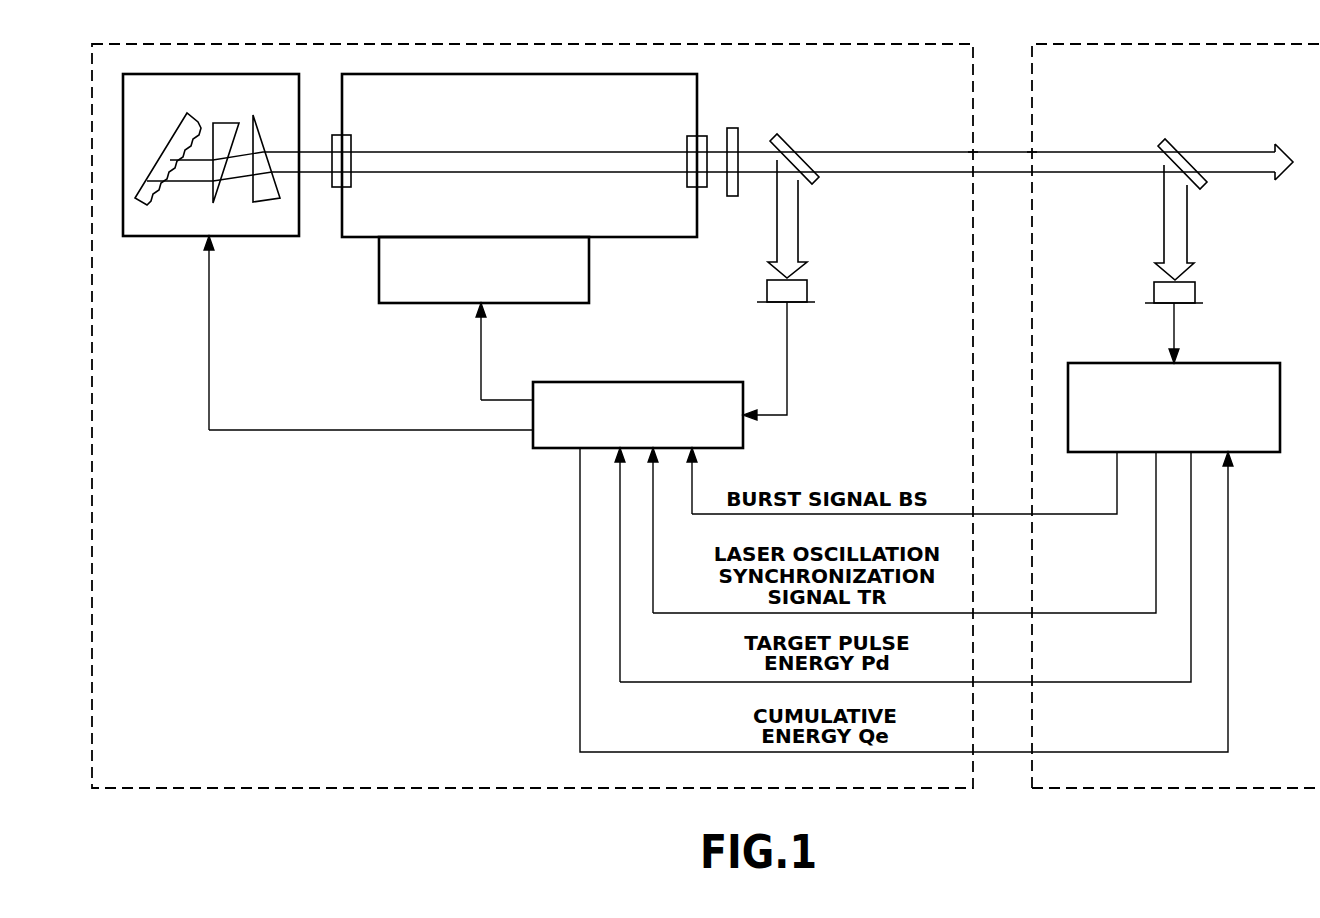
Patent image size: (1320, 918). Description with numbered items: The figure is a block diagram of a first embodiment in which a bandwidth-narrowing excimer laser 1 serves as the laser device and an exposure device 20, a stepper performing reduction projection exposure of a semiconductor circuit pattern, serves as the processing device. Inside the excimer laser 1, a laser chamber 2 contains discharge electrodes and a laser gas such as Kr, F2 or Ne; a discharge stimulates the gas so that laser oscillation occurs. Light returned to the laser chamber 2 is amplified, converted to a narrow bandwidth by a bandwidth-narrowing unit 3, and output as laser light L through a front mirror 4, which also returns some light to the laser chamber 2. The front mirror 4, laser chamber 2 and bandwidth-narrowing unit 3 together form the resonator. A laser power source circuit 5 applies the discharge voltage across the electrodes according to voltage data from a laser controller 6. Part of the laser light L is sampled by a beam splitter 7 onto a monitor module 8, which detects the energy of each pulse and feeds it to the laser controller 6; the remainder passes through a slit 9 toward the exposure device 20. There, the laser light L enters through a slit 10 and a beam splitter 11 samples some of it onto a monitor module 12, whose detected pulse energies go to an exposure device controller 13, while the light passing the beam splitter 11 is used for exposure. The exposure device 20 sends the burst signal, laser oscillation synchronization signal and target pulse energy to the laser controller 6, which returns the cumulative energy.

The bandwidth-narrowing excimer laser 1 is at (832, 44).
The exposure device 20 is at (1162, 44).
The laser chamber 2 is at (660, 239).
The bandwidth-narrowing unit 3 is at (180, 237).
The front mirror 4 is at (743, 128).
The laser power source circuit 5 is at (426, 305).
The laser controller 6 is at (661, 382).
The beam splitter 7 is at (785, 142).
The monitor module 8 is at (809, 291).
The slit 9 is at (973, 152).
The slit 10 is at (1032, 152).
The beam splitter 11 is at (1175, 145).
The monitor module 12 is at (1197, 292).
The exposure device controller 13 is at (1230, 363).
The laser light L is at (885, 152).